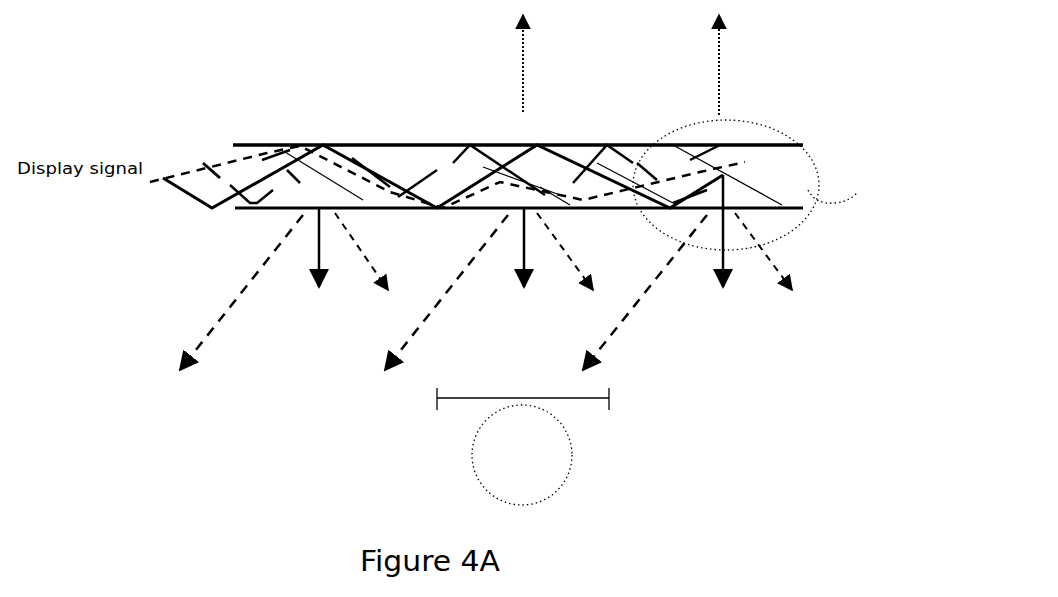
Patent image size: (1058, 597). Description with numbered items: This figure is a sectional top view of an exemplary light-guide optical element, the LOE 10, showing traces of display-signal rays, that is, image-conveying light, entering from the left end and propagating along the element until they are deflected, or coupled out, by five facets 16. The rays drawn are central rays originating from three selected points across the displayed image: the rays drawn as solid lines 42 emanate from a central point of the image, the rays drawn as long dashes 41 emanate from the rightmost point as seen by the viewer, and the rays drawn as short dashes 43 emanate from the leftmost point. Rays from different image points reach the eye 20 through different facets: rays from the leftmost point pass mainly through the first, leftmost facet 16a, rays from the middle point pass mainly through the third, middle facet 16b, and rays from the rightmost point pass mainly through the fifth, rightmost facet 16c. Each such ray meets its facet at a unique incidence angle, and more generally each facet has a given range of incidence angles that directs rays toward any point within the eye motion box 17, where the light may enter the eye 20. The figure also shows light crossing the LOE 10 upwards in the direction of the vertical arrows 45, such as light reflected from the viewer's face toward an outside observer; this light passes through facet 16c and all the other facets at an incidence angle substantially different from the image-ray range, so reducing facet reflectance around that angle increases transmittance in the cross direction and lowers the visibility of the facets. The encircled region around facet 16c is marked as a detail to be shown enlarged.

The LOE 10 is at (357, 93).
The facets 16 is at (407, 167).
The first facet 16a is at (275, 160).
The third facet 16b is at (490, 170).
The fifth facet 16c is at (700, 150).
The eye motion box 17 is at (611, 398).
The eye 20 is at (560, 462).
The long-dash rays 41 is at (195, 156).
The solid-line rays 42 is at (190, 192).
The short-dash rays 43 is at (212, 166).
The vertical arrows 45 is at (533, 47).